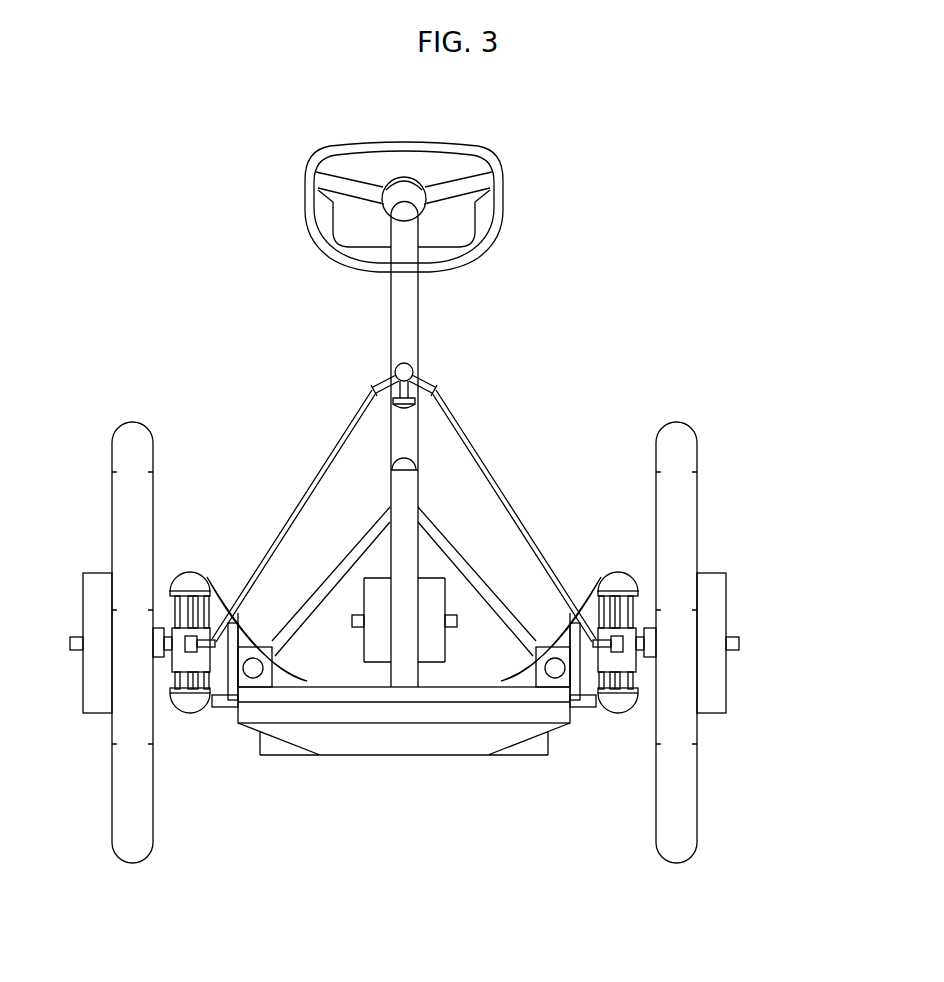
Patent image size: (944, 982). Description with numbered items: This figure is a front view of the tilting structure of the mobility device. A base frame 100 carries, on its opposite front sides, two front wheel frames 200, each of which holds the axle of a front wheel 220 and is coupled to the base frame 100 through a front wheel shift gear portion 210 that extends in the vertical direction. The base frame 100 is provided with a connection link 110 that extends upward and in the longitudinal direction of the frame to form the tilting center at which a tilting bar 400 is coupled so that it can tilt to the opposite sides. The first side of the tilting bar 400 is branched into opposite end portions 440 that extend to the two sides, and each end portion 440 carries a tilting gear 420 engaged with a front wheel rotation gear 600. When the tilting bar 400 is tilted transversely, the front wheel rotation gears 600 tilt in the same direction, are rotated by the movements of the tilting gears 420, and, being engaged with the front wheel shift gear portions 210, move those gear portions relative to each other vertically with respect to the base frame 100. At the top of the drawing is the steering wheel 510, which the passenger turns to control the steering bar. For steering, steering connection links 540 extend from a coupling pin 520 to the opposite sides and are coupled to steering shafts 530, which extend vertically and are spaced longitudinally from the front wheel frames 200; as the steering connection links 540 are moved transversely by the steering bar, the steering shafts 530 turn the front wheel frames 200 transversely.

The base frame 100 is at (400, 755).
The connection link 110 is at (402, 658).
The front wheel frame 200 is at (707, 591).
The front wheel shift gear portion 210 is at (233, 673).
The front wheel 220 is at (690, 505).
The tilting bar 400 is at (400, 297).
The tilting gear 420 is at (515, 680).
The end portion 440 is at (333, 573).
The steering wheel 510 is at (483, 218).
The coupling pin 520 is at (410, 386).
The steering shaft 530 is at (618, 613).
The steering connection link 540 is at (320, 455).
The front wheel rotation gear 600 is at (557, 676).